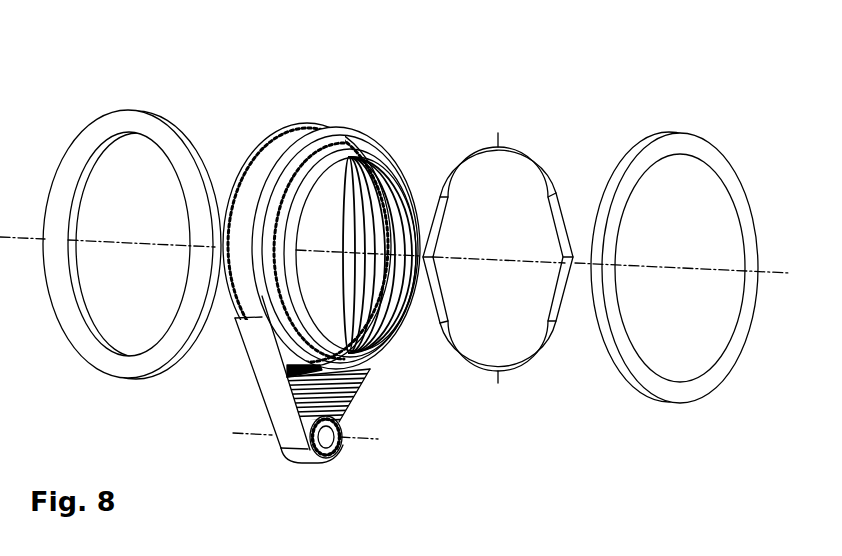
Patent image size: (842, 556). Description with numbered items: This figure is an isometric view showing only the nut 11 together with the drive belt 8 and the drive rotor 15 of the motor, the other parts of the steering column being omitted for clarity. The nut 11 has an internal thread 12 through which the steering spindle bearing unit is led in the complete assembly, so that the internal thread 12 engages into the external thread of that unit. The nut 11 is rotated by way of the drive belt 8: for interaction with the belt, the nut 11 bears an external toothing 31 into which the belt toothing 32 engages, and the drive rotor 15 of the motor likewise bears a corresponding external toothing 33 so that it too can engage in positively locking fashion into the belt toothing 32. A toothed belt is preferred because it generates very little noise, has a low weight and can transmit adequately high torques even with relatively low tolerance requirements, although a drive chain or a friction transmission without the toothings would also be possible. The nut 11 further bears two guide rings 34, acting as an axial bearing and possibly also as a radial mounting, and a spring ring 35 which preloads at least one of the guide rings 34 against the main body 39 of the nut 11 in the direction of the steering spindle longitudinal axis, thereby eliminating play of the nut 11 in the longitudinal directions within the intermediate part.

The drive belt 8 is at (337, 412).
The nut 11 is at (370, 237).
The internal thread 12 is at (380, 228).
The drive rotor 15 is at (333, 443).
The external toothing 31 is at (243, 162).
The belt toothing 32 is at (347, 398).
The external toothing 33 is at (340, 437).
The guide ring 34 is at (143, 123).
The spring ring 35 is at (533, 150).
The main body 39 is at (365, 150).